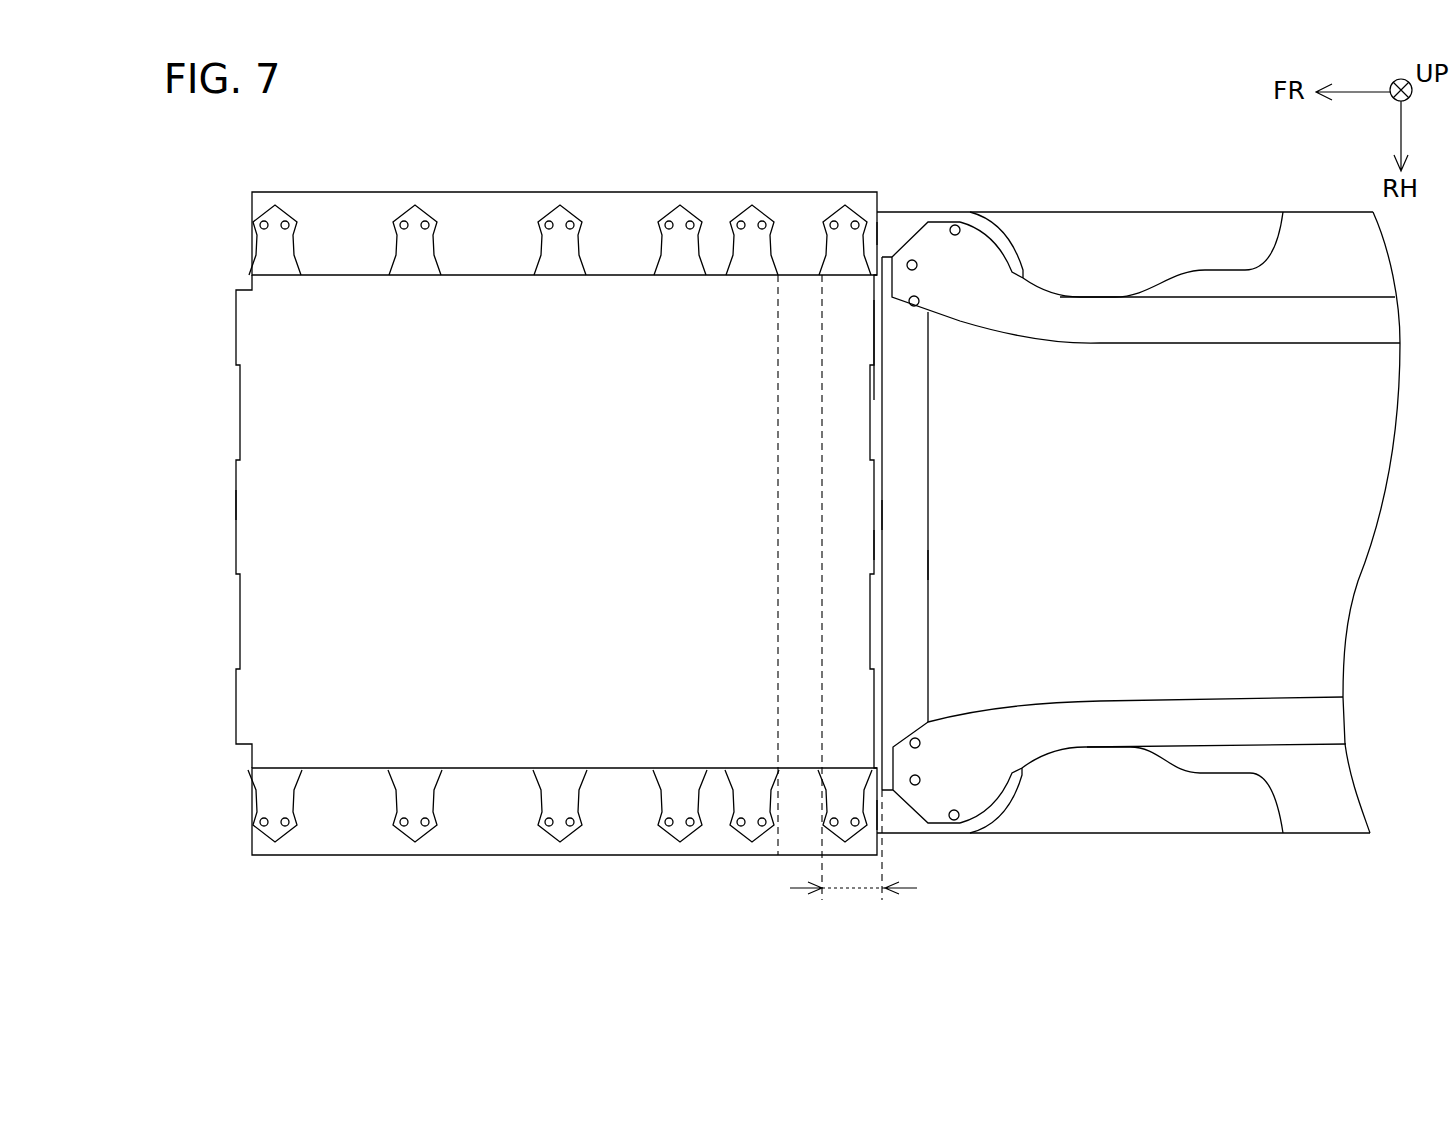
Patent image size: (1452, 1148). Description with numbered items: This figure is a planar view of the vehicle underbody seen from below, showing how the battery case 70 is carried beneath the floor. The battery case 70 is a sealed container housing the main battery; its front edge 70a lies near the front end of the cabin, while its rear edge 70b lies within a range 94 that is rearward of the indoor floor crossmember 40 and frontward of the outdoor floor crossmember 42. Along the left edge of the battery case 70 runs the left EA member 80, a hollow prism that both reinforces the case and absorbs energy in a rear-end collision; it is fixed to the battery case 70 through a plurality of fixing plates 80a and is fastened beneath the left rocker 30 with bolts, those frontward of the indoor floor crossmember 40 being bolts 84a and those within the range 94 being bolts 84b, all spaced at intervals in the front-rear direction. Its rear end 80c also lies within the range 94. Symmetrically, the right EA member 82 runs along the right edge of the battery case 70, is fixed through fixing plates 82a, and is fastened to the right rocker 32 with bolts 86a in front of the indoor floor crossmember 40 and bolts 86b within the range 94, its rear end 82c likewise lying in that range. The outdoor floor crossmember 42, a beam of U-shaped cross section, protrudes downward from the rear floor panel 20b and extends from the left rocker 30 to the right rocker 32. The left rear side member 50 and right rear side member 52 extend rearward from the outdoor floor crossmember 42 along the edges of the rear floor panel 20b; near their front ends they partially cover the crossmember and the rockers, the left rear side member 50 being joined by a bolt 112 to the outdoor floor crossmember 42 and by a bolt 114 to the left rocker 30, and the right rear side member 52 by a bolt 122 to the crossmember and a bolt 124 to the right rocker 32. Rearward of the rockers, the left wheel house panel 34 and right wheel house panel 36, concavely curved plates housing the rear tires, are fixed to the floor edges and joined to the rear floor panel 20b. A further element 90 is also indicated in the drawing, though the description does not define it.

The battery case 70 is at (268, 635).
The front edge of the battery case 70a is at (237, 505).
The rear edge of the battery case 70b is at (879, 353).
The left EA member 80 is at (468, 218).
The fixing plates 80a is at (416, 210).
The rear end of the left EA member 80c is at (885, 233).
The bolts 84a is at (573, 219).
The bolts 84b is at (856, 219).
The right EA member 82 is at (468, 830).
The fixing plates 82a is at (416, 832).
The rear end of the right EA member 82c is at (880, 815).
The bolts 86a is at (573, 828).
The bolts 86b is at (833, 815).
The left rocker 30 is at (887, 248).
The right rocker 32 is at (907, 818).
The left wheel house panel 34 is at (1121, 240).
The right wheel house panel 36 is at (1217, 805).
The indoor floor crossmember 40 is at (793, 530).
The rear floor panel 20b is at (866, 545).
The outdoor floor crossmember 42 is at (906, 521).
The left rear side member 50 is at (1178, 317).
The right rear side member 52 is at (1287, 728).
The partition wall 90 is at (905, 565).
The range 94 is at (855, 889).
The bolt 112 is at (915, 295).
The bolt 114 is at (959, 226).
The bolt 122 is at (1021, 768).
The bolt 124 is at (921, 743).